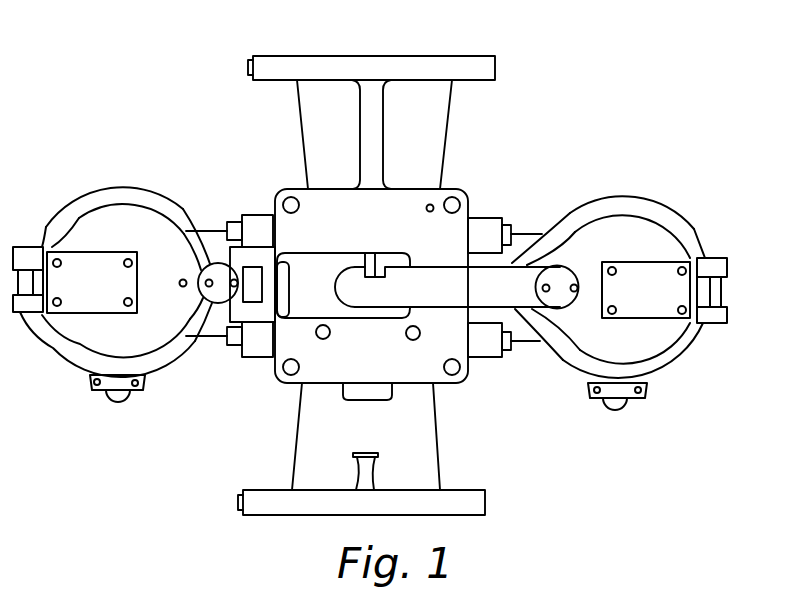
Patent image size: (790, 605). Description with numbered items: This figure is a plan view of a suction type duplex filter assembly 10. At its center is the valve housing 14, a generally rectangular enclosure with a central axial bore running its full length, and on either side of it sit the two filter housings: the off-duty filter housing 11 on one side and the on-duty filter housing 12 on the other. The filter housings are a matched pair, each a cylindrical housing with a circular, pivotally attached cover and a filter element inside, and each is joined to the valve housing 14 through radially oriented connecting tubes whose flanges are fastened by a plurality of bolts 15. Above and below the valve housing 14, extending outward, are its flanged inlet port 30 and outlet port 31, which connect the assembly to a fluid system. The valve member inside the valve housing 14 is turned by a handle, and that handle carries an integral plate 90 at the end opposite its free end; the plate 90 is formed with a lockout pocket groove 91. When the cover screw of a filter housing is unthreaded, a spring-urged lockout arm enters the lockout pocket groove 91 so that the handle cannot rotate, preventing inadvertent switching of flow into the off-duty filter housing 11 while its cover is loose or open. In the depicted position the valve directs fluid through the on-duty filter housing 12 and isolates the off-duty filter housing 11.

The duplex filter assembly 10 is at (207, 148).
The off-duty filter housing 11 is at (81, 196).
The on-duty filter housing 12 is at (663, 203).
The valve housing 14 is at (455, 190).
The bolts 15 is at (233, 225).
The inlet port 30 is at (268, 513).
The outlet port 31 is at (272, 63).
The integral plate 90 is at (316, 255).
The lockout pocket groove 91 is at (283, 297).